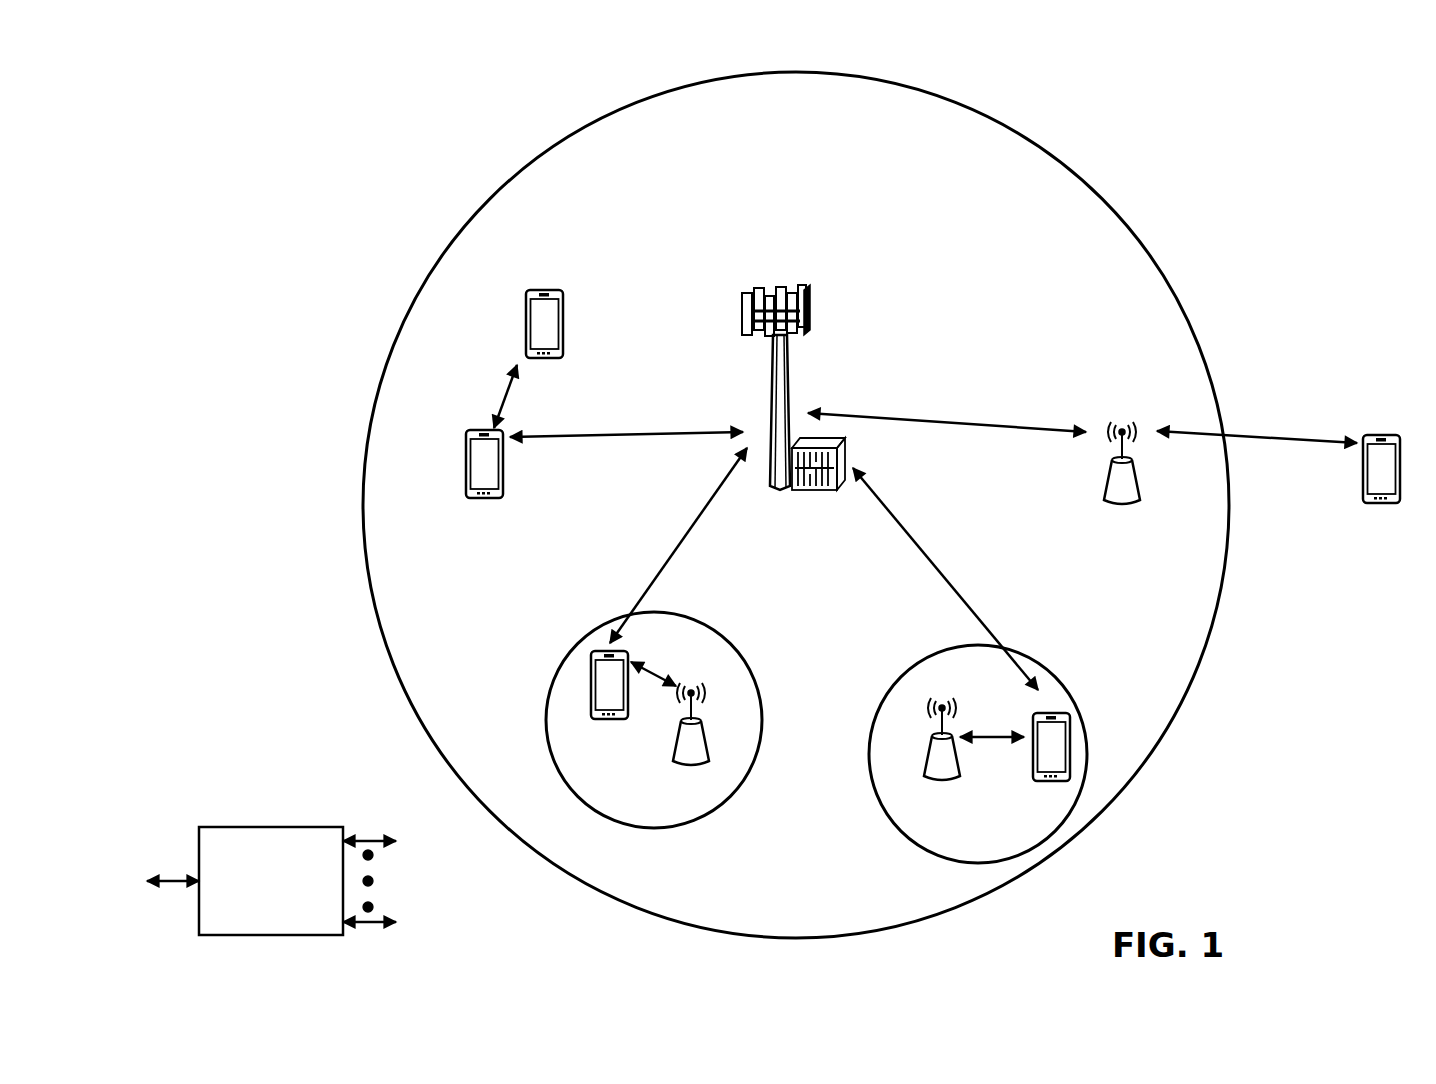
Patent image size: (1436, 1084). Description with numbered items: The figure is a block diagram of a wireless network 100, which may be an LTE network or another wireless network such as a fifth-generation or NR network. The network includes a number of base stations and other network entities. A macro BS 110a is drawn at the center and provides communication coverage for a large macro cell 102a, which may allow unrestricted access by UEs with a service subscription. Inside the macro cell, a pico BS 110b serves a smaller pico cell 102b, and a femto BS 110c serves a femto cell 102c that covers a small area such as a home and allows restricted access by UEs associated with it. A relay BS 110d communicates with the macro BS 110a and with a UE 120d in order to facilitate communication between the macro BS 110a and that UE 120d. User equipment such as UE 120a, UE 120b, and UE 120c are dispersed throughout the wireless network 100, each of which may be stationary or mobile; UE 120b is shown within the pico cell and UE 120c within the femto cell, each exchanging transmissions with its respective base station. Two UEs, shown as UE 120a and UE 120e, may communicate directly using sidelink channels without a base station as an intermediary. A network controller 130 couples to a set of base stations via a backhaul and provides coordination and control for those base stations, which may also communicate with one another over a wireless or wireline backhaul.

The wireless network 100 is at (252, 65).
The macro cell 102a is at (1086, 178).
The pico cell 102b is at (749, 656).
The femto cell 102c is at (912, 667).
The macro BS 110a is at (787, 282).
The pico BS 110b is at (711, 748).
The femto BS 110c is at (925, 765).
The relay BS 110d is at (1122, 422).
The UE 120a is at (466, 460).
The UE 120b is at (597, 721).
The UE 120c is at (1032, 783).
The UE 120d is at (1394, 433).
The UE 120e is at (525, 308).
The network controller 130 is at (270, 826).